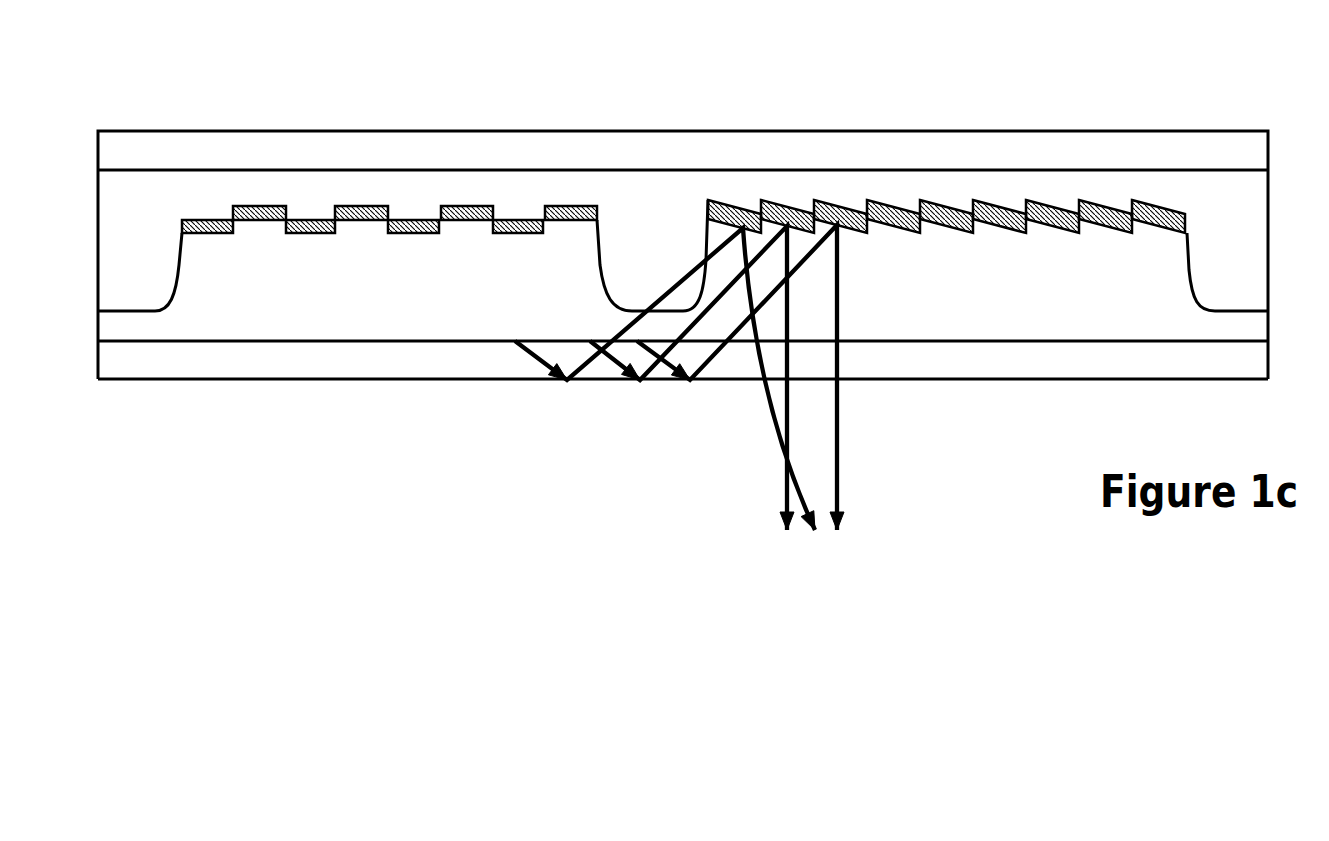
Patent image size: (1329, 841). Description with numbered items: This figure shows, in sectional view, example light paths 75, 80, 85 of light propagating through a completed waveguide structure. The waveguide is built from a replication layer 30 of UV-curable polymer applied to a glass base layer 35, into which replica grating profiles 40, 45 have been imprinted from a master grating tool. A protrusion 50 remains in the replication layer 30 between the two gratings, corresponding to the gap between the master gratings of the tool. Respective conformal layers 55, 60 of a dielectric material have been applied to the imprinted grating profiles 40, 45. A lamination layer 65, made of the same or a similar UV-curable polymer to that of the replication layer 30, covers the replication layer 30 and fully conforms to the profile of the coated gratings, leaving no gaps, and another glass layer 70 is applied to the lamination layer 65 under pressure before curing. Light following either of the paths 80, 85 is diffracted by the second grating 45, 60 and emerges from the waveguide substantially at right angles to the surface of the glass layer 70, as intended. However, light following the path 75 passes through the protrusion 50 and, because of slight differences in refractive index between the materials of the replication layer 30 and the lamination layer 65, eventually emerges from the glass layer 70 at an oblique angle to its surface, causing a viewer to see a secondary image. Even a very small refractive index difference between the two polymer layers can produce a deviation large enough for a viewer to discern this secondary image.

The replication layer 30 is at (1245, 215).
The glass base layer 35 is at (118, 152).
The replica grating profile 40 is at (262, 206).
The replica grating profile 45 is at (954, 208).
The protrusion 50 is at (652, 263).
The conformal layer 55 is at (312, 233).
The conformal layer 60 is at (1110, 230).
The lamination layer 65 is at (113, 326).
The glass layer 70 is at (1257, 358).
The light path 75 is at (540, 380).
The light path 80 is at (615, 380).
The light path 85 is at (673, 380).